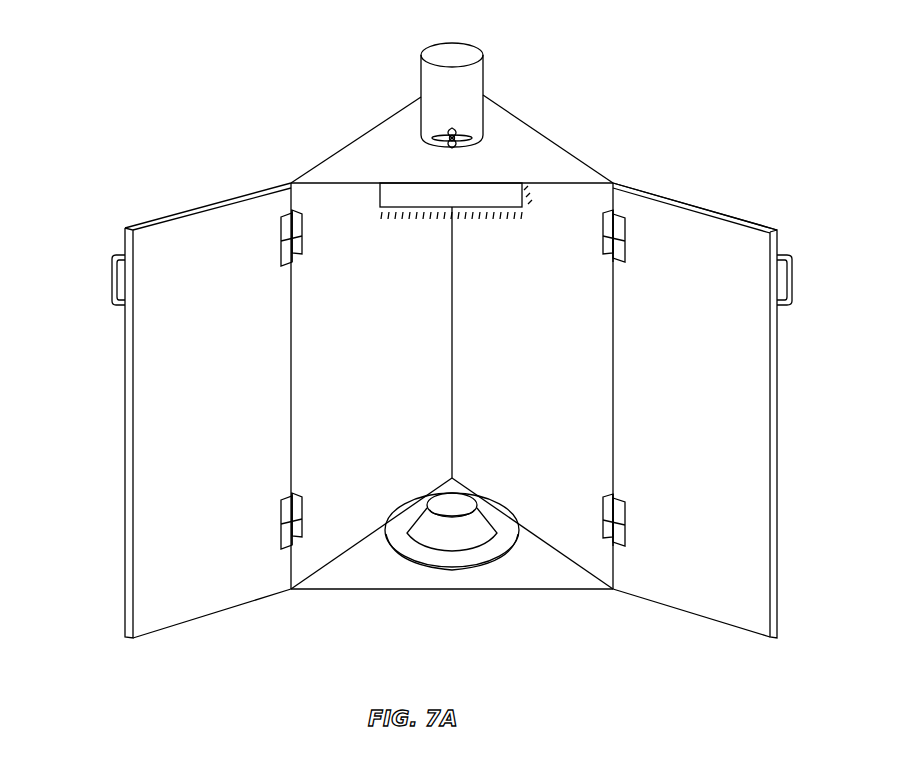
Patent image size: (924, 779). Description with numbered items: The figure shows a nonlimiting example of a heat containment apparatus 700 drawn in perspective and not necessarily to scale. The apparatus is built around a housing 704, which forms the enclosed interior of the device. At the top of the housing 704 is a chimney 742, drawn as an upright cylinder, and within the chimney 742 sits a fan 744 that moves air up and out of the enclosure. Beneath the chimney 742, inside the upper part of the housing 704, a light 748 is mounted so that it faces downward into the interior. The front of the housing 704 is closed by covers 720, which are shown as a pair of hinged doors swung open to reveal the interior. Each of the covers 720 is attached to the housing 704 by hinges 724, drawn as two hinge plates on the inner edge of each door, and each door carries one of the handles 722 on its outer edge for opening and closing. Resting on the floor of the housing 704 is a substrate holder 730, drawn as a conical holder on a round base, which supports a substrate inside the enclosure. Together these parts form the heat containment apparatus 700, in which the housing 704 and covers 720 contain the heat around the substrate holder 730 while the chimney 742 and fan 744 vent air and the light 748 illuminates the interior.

The heat containment apparatus 700 is at (178, 44).
The housing 704 is at (115, 195).
The covers 720 is at (695, 605).
The handles 722 is at (770, 245).
The hinges 724 is at (613, 540).
The substrate holder 730 is at (463, 555).
The chimney 742 is at (466, 88).
The fan 744 is at (480, 138).
The light 748 is at (510, 195).